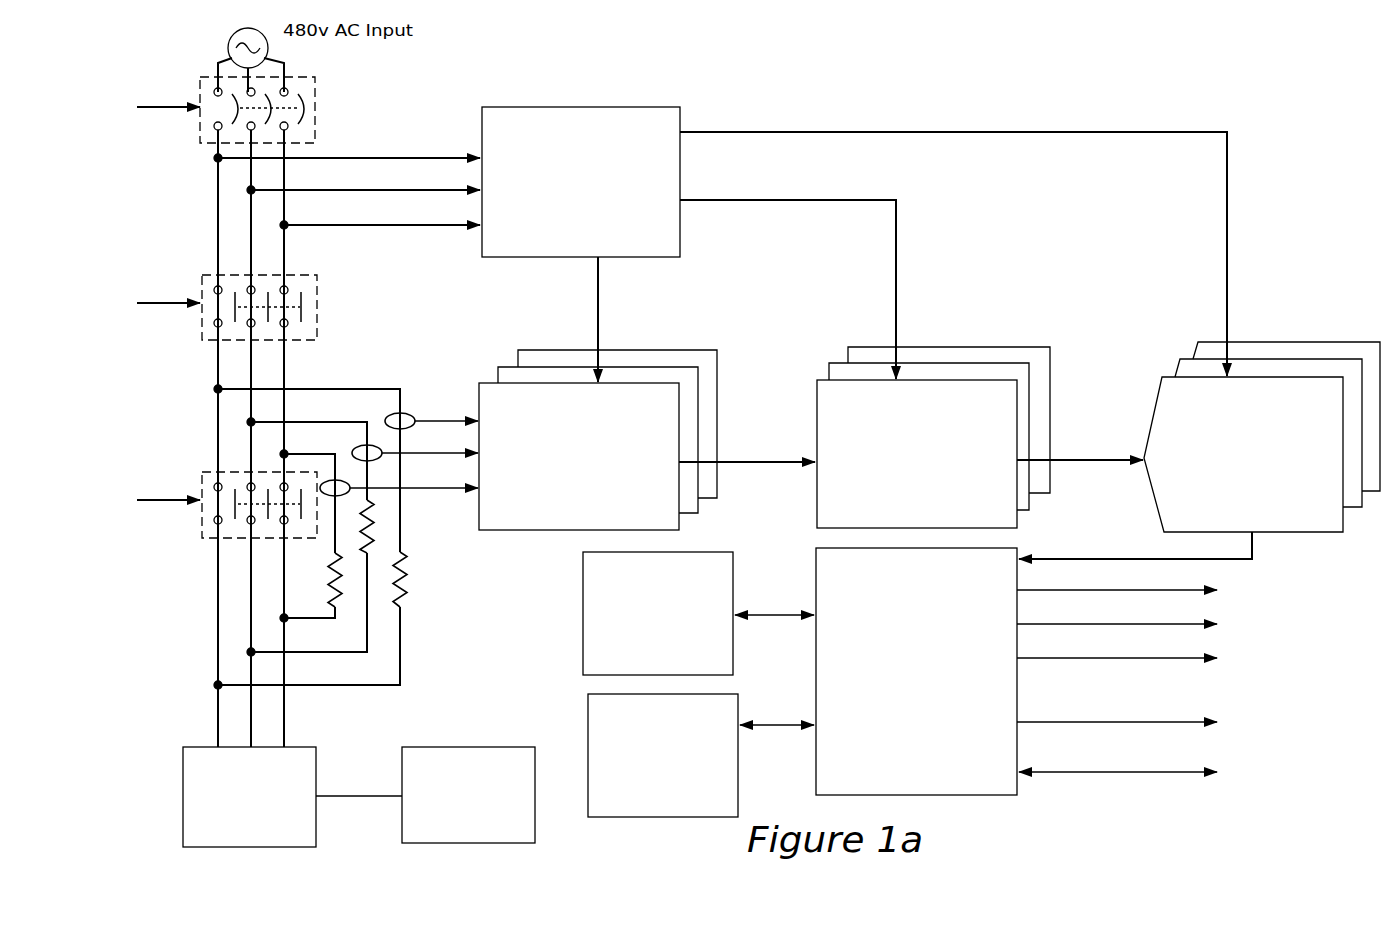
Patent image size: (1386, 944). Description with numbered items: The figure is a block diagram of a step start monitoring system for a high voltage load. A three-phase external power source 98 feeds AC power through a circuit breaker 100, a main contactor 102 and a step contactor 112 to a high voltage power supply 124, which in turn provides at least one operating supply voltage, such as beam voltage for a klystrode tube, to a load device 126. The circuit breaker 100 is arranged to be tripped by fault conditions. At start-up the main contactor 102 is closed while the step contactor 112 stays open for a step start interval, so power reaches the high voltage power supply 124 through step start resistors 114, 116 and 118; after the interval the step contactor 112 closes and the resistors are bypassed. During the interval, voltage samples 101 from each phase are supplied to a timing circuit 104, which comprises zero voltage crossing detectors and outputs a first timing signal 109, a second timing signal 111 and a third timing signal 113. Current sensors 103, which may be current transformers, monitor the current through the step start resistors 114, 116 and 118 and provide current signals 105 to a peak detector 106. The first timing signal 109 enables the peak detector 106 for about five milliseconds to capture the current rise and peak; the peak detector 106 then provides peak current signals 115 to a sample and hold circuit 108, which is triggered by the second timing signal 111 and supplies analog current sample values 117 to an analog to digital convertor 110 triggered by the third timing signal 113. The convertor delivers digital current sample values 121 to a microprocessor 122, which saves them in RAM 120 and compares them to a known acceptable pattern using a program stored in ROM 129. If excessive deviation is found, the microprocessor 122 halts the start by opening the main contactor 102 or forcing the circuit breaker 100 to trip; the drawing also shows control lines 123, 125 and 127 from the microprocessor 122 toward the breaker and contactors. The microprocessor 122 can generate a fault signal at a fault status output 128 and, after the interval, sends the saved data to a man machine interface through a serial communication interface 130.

The external power source 98 is at (268, 47).
The circuit breaker 100 is at (315, 94).
The voltage samples 101 is at (398, 223).
The main contactor 102 is at (317, 305).
The current sensors 103 is at (333, 480).
The timing circuit 104 is at (612, 123).
The current signals 105 is at (416, 485).
The peak detector 106 is at (632, 382).
The sample and hold circuit 108 is at (962, 380).
The first timing signal 109 is at (596, 302).
The analog to digital convertor 110 is at (1162, 377).
The second timing signal 111 is at (896, 222).
The step contactor 112 is at (317, 526).
The third timing signal 113 is at (1223, 192).
The step resistor 114 is at (337, 602).
The peak current signals 115 is at (763, 462).
The step resistor 116 is at (372, 552).
The analog current sample values 117 is at (1073, 458).
The step resistor 118 is at (402, 603).
The RAM 120 is at (617, 650).
The digital current sample values 121 is at (1135, 546).
The microprocessor 122 is at (922, 773).
The first contactor control signal 123 is at (677, 336).
The high voltage power supply 124 is at (302, 747).
The second contactor control signal 125 is at (677, 453).
The load device 126 is at (507, 747).
The third contactor control signal 127 is at (677, 569).
The fault status output 128 is at (1178, 721).
The ROM 129 is at (657, 792).
The serial communication interface 130 is at (1184, 796).